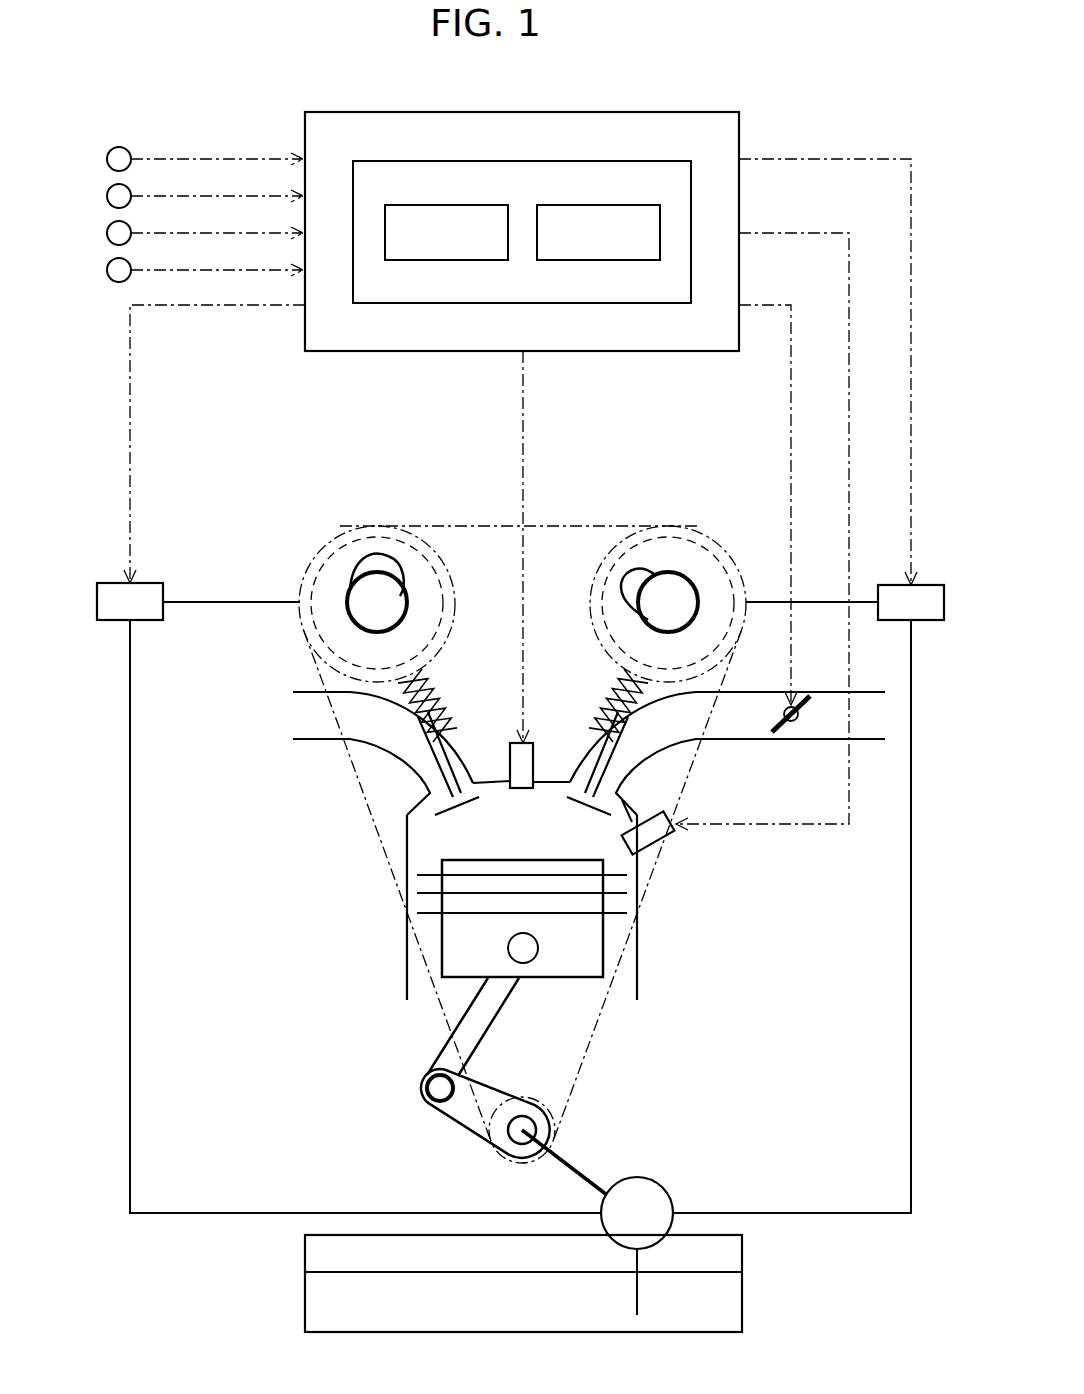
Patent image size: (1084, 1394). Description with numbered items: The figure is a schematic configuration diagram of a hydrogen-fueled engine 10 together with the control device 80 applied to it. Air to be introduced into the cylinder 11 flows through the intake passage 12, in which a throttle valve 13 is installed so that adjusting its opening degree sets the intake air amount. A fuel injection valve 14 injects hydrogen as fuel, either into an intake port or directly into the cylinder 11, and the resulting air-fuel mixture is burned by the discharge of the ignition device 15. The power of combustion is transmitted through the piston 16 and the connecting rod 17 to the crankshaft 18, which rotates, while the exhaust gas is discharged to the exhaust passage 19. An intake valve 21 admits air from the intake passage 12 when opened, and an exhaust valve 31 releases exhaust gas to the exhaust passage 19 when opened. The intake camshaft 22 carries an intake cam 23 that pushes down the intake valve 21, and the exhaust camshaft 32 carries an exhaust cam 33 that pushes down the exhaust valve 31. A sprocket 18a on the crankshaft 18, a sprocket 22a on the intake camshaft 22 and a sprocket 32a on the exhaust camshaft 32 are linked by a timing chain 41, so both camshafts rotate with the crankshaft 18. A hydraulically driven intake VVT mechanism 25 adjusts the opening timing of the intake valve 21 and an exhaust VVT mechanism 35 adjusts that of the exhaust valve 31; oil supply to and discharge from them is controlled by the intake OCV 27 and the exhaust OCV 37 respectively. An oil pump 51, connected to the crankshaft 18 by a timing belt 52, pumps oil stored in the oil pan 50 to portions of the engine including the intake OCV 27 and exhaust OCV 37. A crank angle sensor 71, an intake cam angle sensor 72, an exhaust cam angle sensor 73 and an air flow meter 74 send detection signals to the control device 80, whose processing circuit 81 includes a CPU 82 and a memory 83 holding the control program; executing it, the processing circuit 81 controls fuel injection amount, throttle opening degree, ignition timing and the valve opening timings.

The hydrogen-fueled engine 10 is at (75, 516).
The cylinder 11 is at (407, 852).
The intake passage 12 is at (866, 739).
The throttle valve 13 is at (795, 722).
The fuel injection valve 14 is at (622, 840).
The ignition device 15 is at (533, 750).
The piston 16 is at (450, 937).
The connecting rod 17 is at (497, 1008).
The crankshaft 18 is at (522, 1128).
The sprocket 18a is at (500, 1163).
The exhaust passage 19 is at (320, 740).
The intake valve 21 is at (613, 760).
The intake camshaft 22 is at (655, 608).
The sprocket 22a is at (668, 537).
The intake cam 23 is at (625, 584).
The intake VVT mechanism 25 is at (640, 558).
The intake OCV 27 is at (928, 585).
The exhaust valve 31 is at (440, 757).
The exhaust camshaft 32 is at (387, 608).
The sprocket 32a is at (378, 535).
The exhaust cam 33 is at (407, 577).
The exhaust VVT mechanism 35 is at (418, 562).
The exhaust OCV 37 is at (142, 583).
The timing chain 41 is at (607, 1032).
The oil pan 50 is at (742, 1290).
The oil pump 51 is at (667, 1187).
The timing belt 52 is at (580, 1170).
The crank angle sensor 71 is at (107, 159).
The intake cam angle sensor 72 is at (107, 196).
The exhaust cam angle sensor 73 is at (107, 233).
The air flow meter 74 is at (107, 270).
The control device 80 is at (665, 112).
The processing circuit 81 is at (620, 161).
The CPU 82 is at (435, 205).
The memory 83 is at (590, 205).